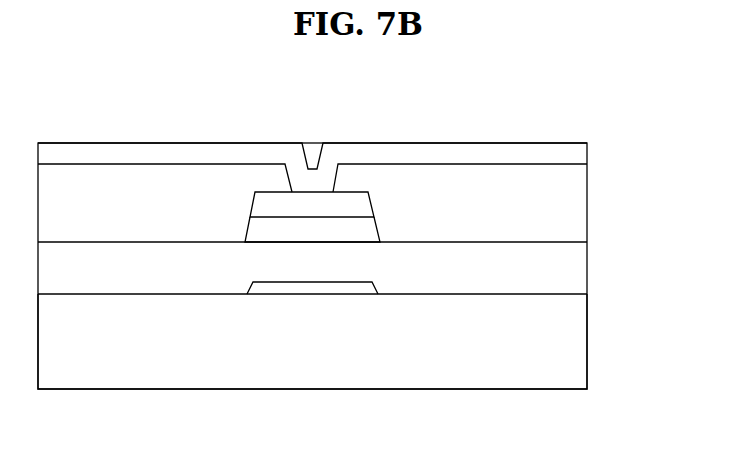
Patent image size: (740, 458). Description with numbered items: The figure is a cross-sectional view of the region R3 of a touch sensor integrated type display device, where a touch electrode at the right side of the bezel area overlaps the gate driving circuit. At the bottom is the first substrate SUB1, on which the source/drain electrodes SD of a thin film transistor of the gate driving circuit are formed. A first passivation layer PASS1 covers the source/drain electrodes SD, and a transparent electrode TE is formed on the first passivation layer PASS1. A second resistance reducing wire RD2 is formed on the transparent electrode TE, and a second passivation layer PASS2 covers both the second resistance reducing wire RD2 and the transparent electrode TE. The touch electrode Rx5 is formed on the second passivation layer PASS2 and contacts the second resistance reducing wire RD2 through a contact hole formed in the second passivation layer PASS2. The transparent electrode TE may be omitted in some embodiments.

The region R3 is at (62, 102).
The 2-5 touch electrode Rx5 is at (120, 152).
The second resistance reducing wire RD2 is at (270, 203).
The transparent electrode TE is at (355, 230).
The second passivation layer PASS2 is at (582, 200).
The first passivation layer PASS1 is at (582, 268).
The source/drain electrodes SD is at (310, 290).
The first substrate SUB1 is at (582, 342).